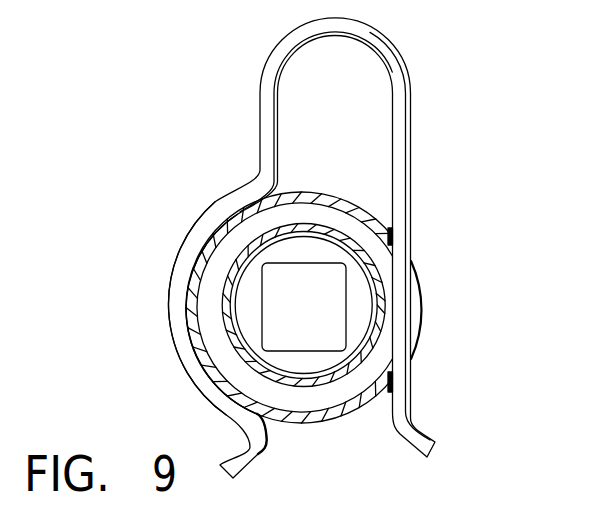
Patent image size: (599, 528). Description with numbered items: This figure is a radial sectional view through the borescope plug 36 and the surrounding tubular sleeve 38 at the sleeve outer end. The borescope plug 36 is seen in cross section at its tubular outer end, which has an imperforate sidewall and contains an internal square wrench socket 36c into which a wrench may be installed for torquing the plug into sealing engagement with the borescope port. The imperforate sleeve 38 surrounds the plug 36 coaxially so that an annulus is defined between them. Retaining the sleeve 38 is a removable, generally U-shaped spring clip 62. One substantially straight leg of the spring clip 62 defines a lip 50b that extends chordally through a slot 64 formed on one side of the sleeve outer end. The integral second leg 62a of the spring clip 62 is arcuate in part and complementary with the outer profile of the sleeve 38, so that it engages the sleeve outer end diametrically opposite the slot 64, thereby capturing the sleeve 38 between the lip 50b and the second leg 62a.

The spring clip 62 is at (312, 248).
The second leg 62a is at (172, 350).
The tubular sleeve 38 is at (307, 191).
The borescope plug 36 is at (250, 232).
The square wrench socket 36c is at (345, 321).
The slot 64 is at (394, 243).
The lip 50b is at (402, 309).